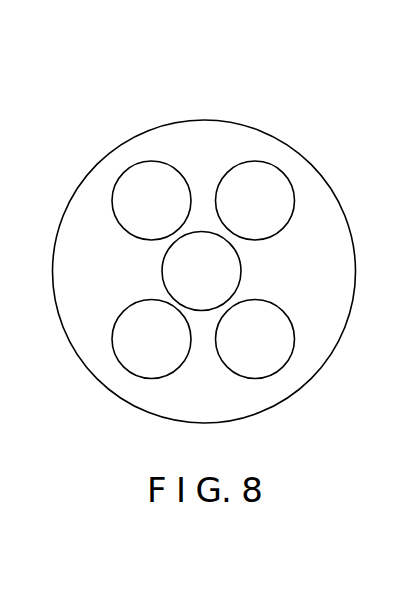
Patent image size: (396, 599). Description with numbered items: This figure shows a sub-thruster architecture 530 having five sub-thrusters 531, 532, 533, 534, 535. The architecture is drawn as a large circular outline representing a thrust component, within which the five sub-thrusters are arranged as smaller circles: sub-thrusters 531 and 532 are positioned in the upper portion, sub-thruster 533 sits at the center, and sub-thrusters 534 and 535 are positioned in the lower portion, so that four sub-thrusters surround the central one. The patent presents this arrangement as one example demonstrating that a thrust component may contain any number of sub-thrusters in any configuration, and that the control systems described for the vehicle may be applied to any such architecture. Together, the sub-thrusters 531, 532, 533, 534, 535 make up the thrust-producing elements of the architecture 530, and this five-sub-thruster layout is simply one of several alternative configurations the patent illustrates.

The sub-thruster architecture 530 is at (241, 123).
The sub-thruster 531 is at (151, 200).
The sub-thruster 532 is at (255, 200).
The sub-thruster 533 is at (201, 271).
The sub-thruster 534 is at (151, 339).
The sub-thruster 535 is at (255, 339).